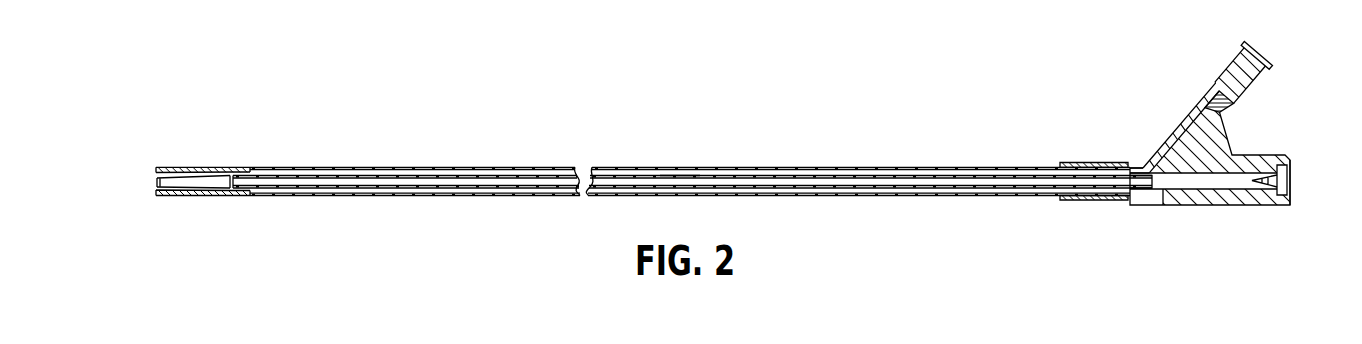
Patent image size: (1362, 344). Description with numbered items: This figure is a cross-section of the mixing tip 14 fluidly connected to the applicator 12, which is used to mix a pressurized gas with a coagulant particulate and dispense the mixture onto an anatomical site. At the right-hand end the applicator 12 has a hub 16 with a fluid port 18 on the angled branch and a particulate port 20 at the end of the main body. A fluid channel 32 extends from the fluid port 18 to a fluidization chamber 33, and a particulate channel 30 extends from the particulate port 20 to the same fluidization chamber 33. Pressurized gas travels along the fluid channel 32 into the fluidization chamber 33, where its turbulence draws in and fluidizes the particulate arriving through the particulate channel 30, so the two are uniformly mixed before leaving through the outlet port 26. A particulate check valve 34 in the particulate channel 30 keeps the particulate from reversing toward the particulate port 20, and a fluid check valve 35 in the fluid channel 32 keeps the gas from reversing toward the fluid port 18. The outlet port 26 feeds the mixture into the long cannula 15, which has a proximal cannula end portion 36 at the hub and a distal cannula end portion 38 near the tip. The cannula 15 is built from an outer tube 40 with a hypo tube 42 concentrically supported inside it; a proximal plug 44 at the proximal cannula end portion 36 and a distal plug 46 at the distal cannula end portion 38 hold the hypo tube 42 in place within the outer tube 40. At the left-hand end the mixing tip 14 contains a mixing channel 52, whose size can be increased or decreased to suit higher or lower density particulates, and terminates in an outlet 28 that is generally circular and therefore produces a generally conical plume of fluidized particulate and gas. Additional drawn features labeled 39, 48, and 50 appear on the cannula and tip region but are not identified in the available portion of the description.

The applicator 12 is at (370, 117).
The mixing tip 14 is at (157, 167).
The cannula 15 is at (456, 165).
The hub 16 is at (1137, 157).
The fluid port 18 is at (1271, 66).
The particulate port 20 is at (1291, 192).
The outlet port 26 is at (1073, 199).
The outlet 28 is at (157, 182).
The particulate channel 30 is at (1226, 185).
The fluid channel 32 is at (1177, 140).
The fluidization chamber 33 is at (1144, 177).
The particulate check valve 34 is at (1270, 163).
The fluid check valve 35 is at (1225, 103).
The proximal cannula end portion 36 is at (1055, 163).
The distal cannula end portion 38 is at (263, 167).
The outer tube proximal segment 39 is at (1025, 165).
The outer tube 40 is at (553, 167).
The hypo tube 42 is at (628, 175).
The proximal plug 44 is at (1117, 190).
The distal plug 46 is at (243, 171).
The inner tube wall 48 is at (674, 176).
The core end 50 is at (234, 190).
The mixing channel 52 is at (189, 185).